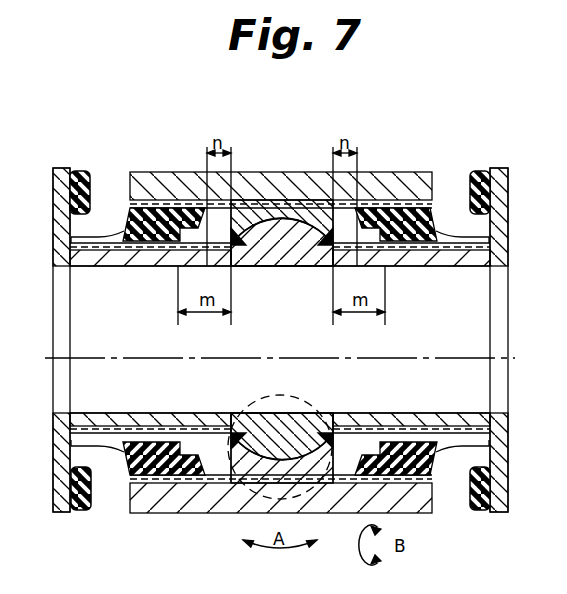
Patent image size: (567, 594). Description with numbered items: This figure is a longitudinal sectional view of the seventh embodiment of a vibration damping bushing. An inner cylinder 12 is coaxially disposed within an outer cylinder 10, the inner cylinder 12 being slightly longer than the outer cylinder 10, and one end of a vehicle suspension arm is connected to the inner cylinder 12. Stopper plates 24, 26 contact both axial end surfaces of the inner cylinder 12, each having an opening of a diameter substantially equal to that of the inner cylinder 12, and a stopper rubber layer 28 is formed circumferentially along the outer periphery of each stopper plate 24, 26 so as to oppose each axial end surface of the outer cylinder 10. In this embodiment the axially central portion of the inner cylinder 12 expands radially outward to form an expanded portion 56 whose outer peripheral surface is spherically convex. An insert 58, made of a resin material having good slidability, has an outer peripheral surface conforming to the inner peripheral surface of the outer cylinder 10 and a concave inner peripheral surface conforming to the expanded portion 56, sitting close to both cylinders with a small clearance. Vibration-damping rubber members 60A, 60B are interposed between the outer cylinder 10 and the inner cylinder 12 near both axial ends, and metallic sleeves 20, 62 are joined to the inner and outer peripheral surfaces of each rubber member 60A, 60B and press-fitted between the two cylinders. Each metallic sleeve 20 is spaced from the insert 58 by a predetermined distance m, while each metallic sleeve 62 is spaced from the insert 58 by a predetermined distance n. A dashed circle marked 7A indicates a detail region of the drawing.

The outer cylinder 10 is at (190, 172).
The inner cylinder 12 is at (288, 268).
The metallic sleeve 20 is at (122, 266).
The stopper plate 24 is at (58, 168).
The stopper plate 26 is at (508, 207).
The stopper rubber layer 28 is at (80, 171).
The expanded portion 56 is at (249, 205).
The insert 58 is at (277, 214).
The vibration-damping rubber member 60A is at (134, 230).
The vibration-damping rubber member 60B is at (428, 232).
The metallic sleeve 62 is at (153, 207).
The detail region of FIG. 7A is at (243, 488).